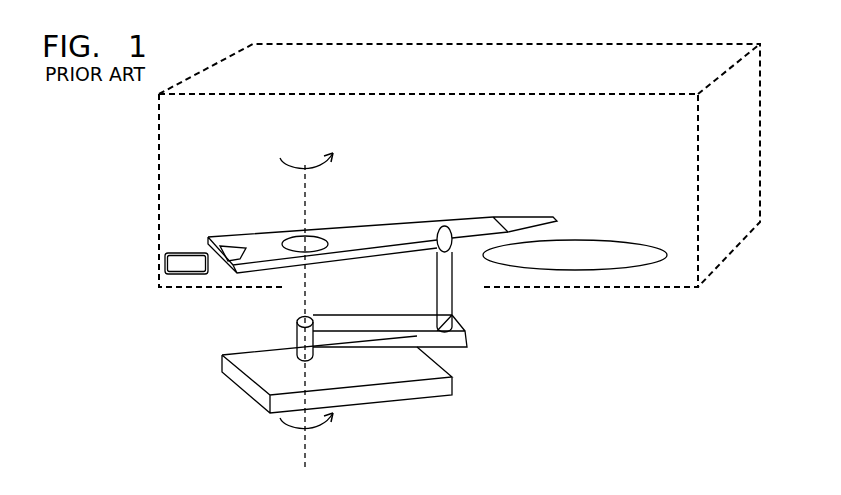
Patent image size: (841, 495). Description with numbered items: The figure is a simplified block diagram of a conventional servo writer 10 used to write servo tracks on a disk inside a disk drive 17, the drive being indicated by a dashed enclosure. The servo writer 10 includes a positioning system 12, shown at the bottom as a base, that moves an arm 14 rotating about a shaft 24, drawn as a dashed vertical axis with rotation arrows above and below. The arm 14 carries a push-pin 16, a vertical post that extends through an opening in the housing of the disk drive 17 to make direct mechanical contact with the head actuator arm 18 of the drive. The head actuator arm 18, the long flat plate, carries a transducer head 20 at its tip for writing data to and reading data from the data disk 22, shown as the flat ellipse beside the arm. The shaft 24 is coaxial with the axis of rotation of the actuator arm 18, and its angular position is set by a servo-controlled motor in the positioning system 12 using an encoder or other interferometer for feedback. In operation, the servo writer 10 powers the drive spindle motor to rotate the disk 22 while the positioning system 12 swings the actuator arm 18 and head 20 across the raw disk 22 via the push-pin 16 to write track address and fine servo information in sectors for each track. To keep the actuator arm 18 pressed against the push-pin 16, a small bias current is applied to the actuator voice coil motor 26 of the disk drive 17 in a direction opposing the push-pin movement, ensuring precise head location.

The servo writer 10 is at (437, 312).
The positioning system 12 is at (377, 404).
The arm 14 is at (468, 338).
The push-pin 16 is at (452, 287).
The disk drive 17 is at (717, 282).
The head actuator arm 18 is at (392, 222).
The transducer head 20 is at (557, 217).
The data disk 22 is at (609, 240).
The shaft 24 is at (305, 447).
The actuator voice coil motor 26 is at (172, 253).